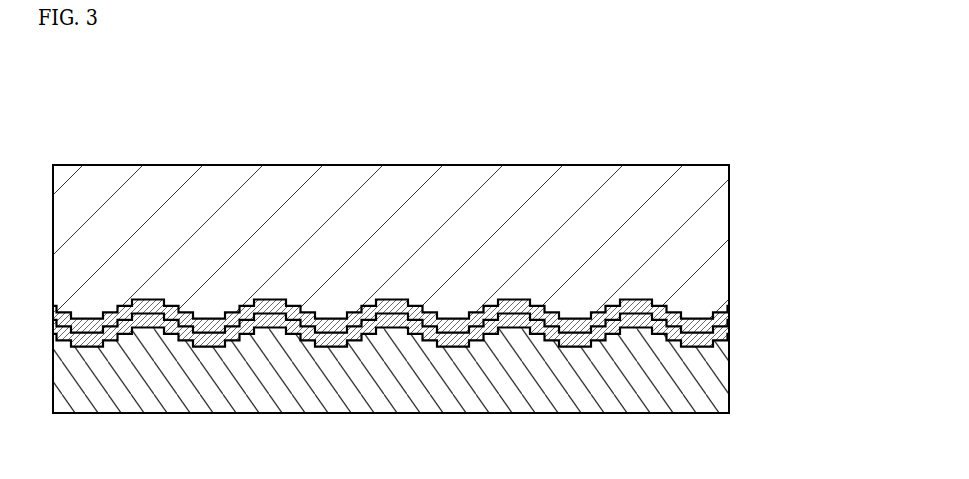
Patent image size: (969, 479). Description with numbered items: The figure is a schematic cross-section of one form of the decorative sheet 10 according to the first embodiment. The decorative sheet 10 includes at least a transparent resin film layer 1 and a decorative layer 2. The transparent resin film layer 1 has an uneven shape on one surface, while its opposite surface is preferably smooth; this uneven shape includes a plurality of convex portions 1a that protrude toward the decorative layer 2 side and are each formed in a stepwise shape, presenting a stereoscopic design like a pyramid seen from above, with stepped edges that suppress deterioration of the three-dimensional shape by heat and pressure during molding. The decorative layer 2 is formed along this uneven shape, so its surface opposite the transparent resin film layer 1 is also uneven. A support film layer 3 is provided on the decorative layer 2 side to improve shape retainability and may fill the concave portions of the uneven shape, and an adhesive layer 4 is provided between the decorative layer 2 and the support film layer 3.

The decorative sheet 10 is at (443, 242).
The transparent resin film layer 1 is at (731, 367).
The convex portions 1a is at (522, 300).
The decorative layer 2 is at (731, 328).
The support film layer 3 is at (731, 233).
The adhesive layer 4 is at (731, 308).